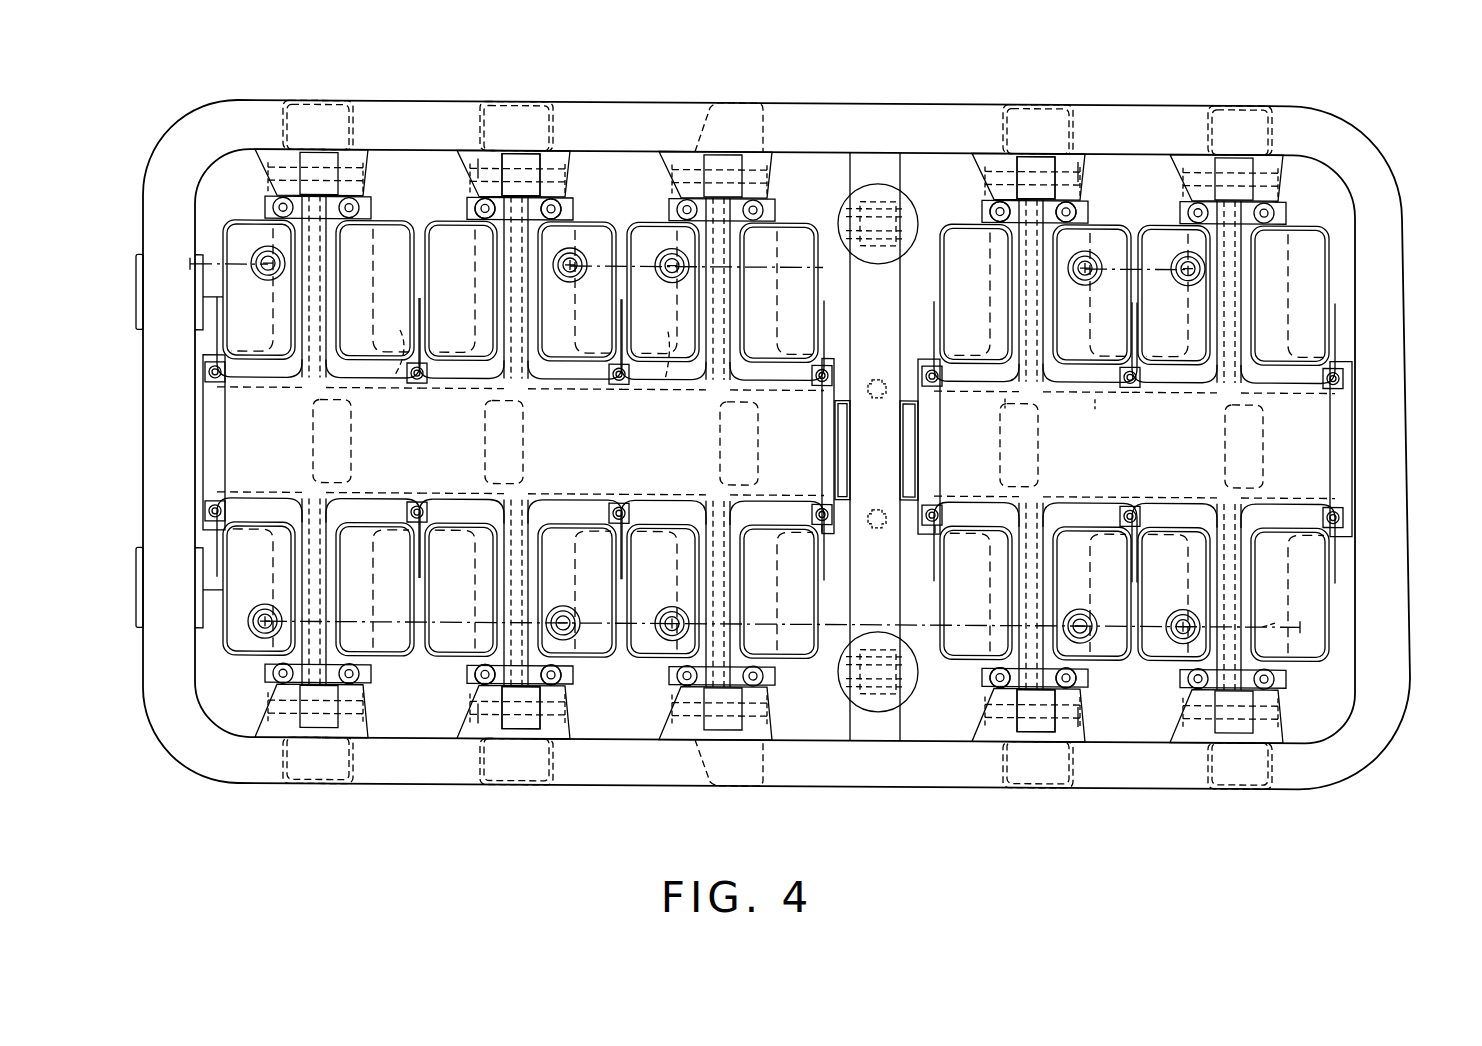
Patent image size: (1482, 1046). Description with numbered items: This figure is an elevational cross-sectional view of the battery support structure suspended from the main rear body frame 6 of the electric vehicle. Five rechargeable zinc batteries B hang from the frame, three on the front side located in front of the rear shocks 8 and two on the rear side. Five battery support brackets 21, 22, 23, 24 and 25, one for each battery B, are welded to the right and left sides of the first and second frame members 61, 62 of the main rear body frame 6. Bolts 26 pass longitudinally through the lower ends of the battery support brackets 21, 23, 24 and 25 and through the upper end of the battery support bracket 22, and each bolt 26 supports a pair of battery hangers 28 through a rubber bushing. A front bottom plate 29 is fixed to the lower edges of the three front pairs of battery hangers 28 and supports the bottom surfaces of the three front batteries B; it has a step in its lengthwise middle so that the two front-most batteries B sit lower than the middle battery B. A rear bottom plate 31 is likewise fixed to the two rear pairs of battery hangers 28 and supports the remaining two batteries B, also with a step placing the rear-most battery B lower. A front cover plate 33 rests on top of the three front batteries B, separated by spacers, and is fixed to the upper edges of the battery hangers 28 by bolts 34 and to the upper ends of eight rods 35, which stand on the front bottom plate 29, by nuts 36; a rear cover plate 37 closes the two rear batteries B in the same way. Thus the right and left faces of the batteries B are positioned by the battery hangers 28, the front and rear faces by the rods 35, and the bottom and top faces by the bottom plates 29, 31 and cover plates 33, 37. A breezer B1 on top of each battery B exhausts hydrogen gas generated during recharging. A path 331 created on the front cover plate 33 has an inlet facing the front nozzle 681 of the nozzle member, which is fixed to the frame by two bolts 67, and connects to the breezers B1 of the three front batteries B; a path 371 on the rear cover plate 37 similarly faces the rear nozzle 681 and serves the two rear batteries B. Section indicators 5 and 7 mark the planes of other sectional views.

The section line 5- 5 is at (185, 448).
The main rear body frame 6 is at (868, 52).
The first frame member 61 is at (402, 107).
The section line 7- 7 is at (1032, 642).
The rear shock 8 is at (917, 229).
The battery support bracket 21 is at (283, 140).
The battery support bracket 22 is at (497, 172).
The battery support bracket 23 is at (728, 116).
The battery support bracket 24 is at (1075, 127).
The battery support bracket 25 is at (1290, 128).
The bolt 26 is at (478, 171).
The battery hanger 28 is at (532, 161).
The front bottom plate 29 is at (362, 634).
The rear bottom plate 31 is at (1275, 620).
The front cover plate 33 is at (383, 380).
The path 331 is at (662, 382).
The bolt 34 is at (550, 225).
The rod 35 is at (220, 387).
The nut 36 is at (413, 506).
The rear cover plate 37 is at (1098, 397).
The path 371 is at (1008, 397).
The second frame member 62 is at (885, 318).
The bolt 67 is at (872, 510).
The nozzle 681 is at (962, 570).
The rechargeable zinc battery B is at (398, 221).
The breezer B1 is at (1228, 442).